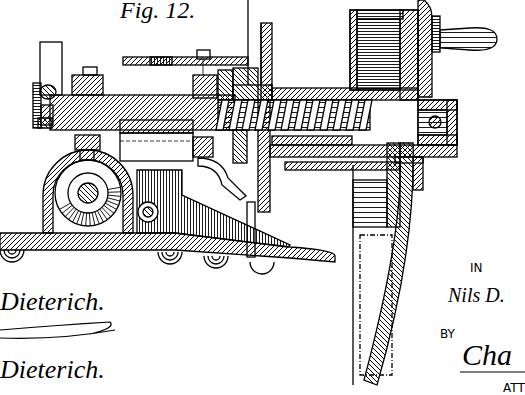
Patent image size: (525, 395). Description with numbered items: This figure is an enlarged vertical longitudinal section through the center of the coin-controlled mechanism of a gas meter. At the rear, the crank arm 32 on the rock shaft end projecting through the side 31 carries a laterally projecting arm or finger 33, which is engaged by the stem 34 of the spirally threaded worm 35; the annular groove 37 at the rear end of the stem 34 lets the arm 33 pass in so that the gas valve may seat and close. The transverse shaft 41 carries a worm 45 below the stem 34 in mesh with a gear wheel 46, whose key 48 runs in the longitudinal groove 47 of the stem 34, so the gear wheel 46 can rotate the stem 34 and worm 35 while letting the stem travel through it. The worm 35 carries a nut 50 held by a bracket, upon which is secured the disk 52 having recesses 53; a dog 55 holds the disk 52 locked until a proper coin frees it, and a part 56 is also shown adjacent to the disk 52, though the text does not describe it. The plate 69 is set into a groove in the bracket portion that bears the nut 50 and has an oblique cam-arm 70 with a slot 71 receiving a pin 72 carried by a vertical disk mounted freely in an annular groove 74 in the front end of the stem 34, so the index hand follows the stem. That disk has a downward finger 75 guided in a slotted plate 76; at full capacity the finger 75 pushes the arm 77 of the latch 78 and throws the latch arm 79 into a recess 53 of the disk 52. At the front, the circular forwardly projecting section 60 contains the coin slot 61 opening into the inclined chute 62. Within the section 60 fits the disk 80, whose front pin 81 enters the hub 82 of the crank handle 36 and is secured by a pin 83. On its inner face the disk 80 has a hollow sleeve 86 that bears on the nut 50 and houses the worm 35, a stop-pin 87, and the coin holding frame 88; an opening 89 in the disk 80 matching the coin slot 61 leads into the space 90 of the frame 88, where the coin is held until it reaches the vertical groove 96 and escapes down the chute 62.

The side of the section 31 is at (28, 3).
The crank arm 32 is at (50, 55).
The arm or finger 33 is at (42, 80).
The stem 34 is at (148, 84).
The worm 35 is at (320, 88).
The crank handle 36 is at (497, 38).
The annular groove 37 is at (38, 122).
The shaft 41 is at (78, 196).
The worm 45 is at (55, 190).
The gear wheel 46 is at (88, 75).
The longitudinal groove 47 is at (140, 141).
The key 48 is at (75, 143).
The nut 50 is at (270, 103).
The disk 52 is at (272, 45).
The recesses 53 is at (268, 210).
The dog 55 is at (258, 40).
The pointer 56 is at (246, 205).
The circular forwardly projecting section 60 is at (384, 50).
The coin slot 61 is at (423, 160).
The chute 62 is at (402, 278).
The plate 69 is at (250, 70).
The cam-arm 70 is at (128, 58).
The slot 71 is at (160, 57).
The pin 72 is at (203, 50).
The annular groove 74 is at (212, 92).
The finger 75 is at (225, 185).
The slotted plate 76 is at (143, 166).
The arm 77 is at (148, 202).
The latch 78 is at (148, 258).
The arm 79 is at (272, 264).
The disk 80 is at (432, 70).
The pin 81 is at (458, 118).
The hub 82 is at (457, 145).
The pin 83 is at (458, 128).
The hollow cylindrical hub or sleeve 86 is at (313, 92).
The stop-pin 87 is at (360, 20).
The coin holding frame 88 is at (318, 170).
The opening 89 is at (423, 170).
The space 90 is at (338, 177).
The vertical groove 96 is at (413, 238).